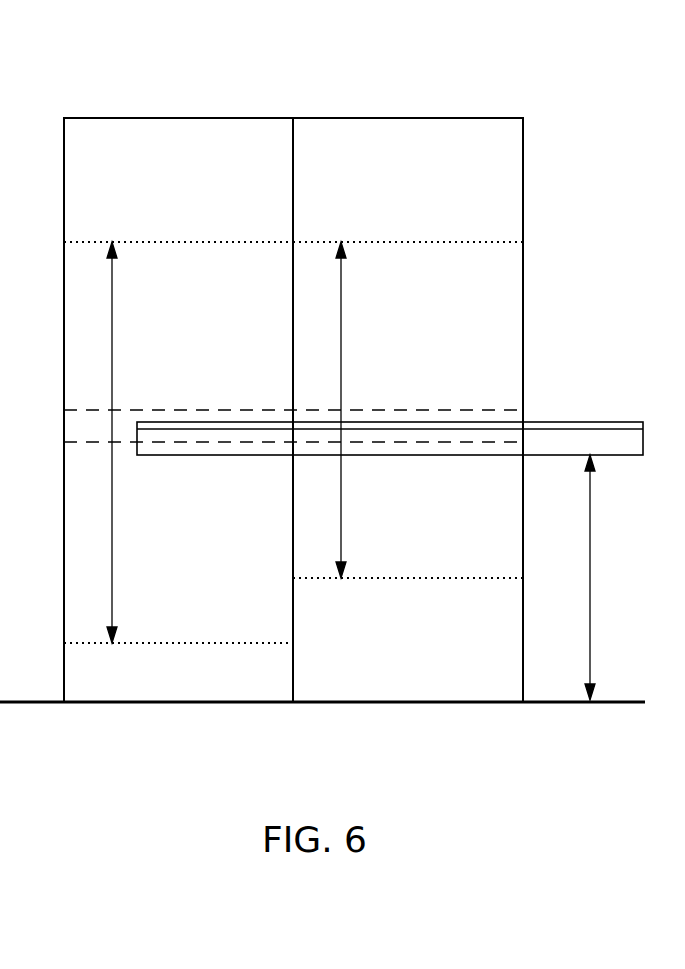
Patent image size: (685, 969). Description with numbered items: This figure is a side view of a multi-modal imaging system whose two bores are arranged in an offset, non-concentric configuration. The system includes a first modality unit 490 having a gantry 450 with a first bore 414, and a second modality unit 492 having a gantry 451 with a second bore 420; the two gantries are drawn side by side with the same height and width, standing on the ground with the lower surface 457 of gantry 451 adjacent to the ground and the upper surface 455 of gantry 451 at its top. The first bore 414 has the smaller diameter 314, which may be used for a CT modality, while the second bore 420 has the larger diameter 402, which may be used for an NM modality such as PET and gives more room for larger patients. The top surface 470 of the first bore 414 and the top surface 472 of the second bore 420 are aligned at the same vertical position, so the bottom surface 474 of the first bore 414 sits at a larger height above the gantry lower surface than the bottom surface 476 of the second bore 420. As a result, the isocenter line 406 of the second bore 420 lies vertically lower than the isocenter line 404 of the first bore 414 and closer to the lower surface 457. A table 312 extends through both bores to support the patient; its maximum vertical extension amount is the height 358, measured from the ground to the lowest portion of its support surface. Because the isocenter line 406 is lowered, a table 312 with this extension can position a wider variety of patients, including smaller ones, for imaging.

The table 312 is at (566, 422).
The diameter 314 is at (341, 306).
The height 358 is at (611, 636).
The diameter 402 is at (112, 306).
The isocenter line 404 is at (438, 410).
The isocenter line 406 is at (445, 444).
The first bore 414 is at (450, 578).
The second bore 420 is at (213, 643).
The gantry 450 is at (337, 118).
The gantry 451 is at (117, 118).
The upper surface 455 is at (85, 104).
The lower surface 457 is at (174, 718).
The top surface 470 is at (403, 242).
The top surface 472 is at (160, 242).
The bottom surface 474 is at (369, 578).
The bottom surface 476 is at (126, 643).
The first modality unit 490 is at (433, 118).
The second modality unit 492 is at (212, 118).